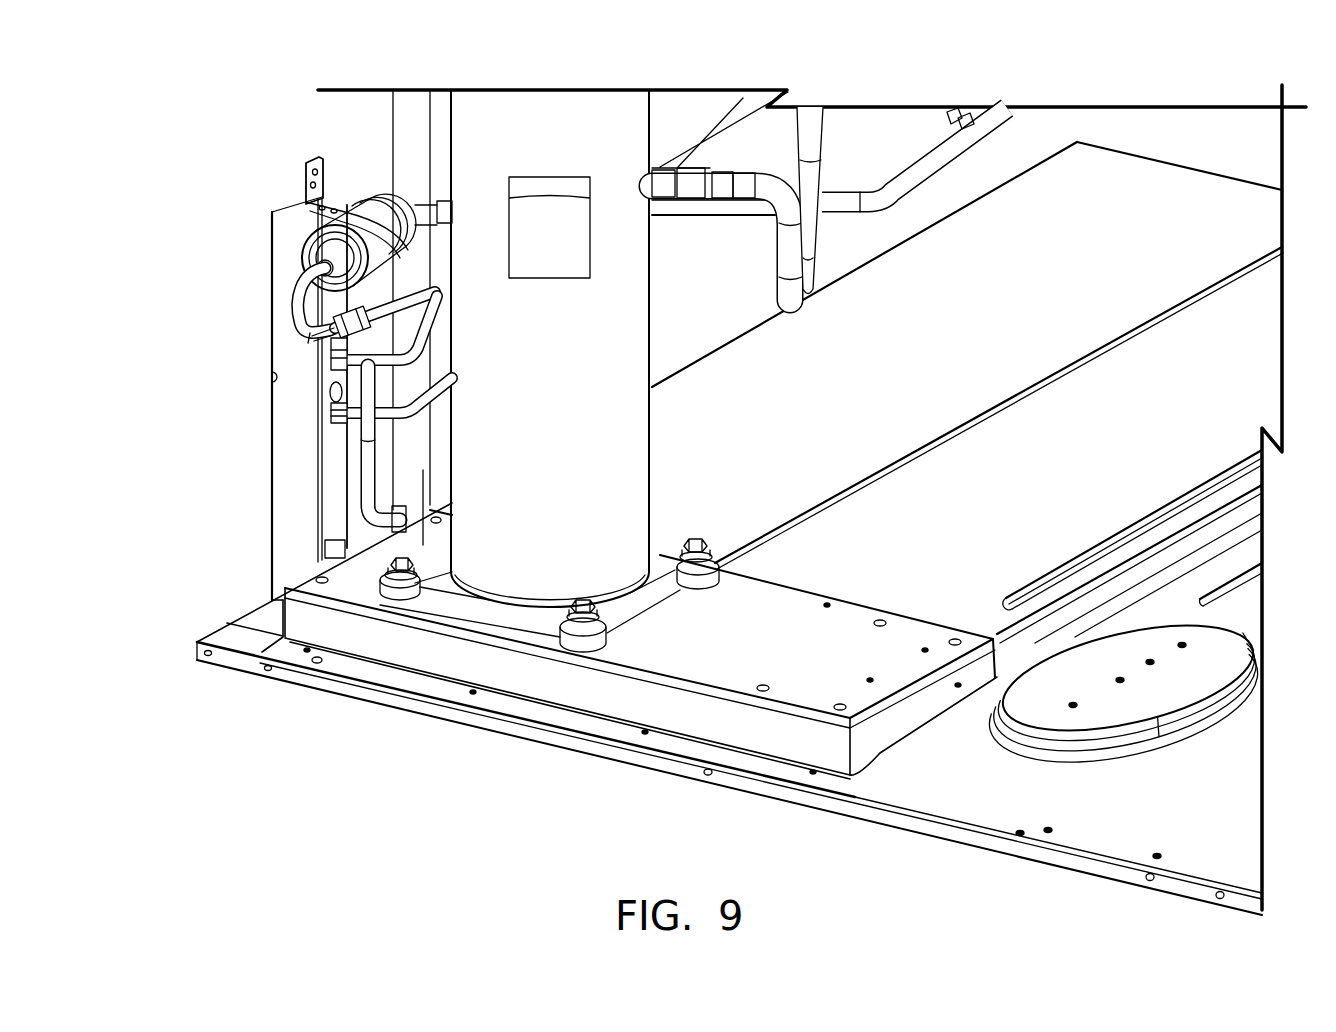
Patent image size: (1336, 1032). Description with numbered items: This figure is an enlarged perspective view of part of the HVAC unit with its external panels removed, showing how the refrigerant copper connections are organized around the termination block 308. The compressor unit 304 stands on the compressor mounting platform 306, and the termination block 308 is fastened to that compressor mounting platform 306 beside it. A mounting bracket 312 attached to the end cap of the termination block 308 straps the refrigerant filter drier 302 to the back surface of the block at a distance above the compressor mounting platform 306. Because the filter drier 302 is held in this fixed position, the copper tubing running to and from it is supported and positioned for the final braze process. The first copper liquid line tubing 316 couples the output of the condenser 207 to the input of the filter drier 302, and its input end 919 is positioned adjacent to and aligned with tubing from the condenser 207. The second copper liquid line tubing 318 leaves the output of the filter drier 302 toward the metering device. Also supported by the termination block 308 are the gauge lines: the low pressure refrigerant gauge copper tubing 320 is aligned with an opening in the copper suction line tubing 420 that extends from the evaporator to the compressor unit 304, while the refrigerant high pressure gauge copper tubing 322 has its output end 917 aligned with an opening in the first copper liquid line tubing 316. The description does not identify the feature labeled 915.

The frame post 207 is at (458, 112).
The filter dryer 302 is at (387, 197).
The compressor 304 is at (624, 420).
The mounting plate 306 is at (778, 645).
The side panel 308 is at (282, 484).
The mounting bracket 312 is at (308, 160).
The tube 316 is at (300, 305).
The refrigerant line 318 is at (973, 143).
The refrigerant line with fittings 320 is at (712, 126).
The service valve 322 is at (350, 373).
The refrigerant pipe 420 is at (815, 148).
The filter assembly 915 is at (280, 247).
The valve 917 is at (355, 348).
The pipe 919 is at (348, 453).